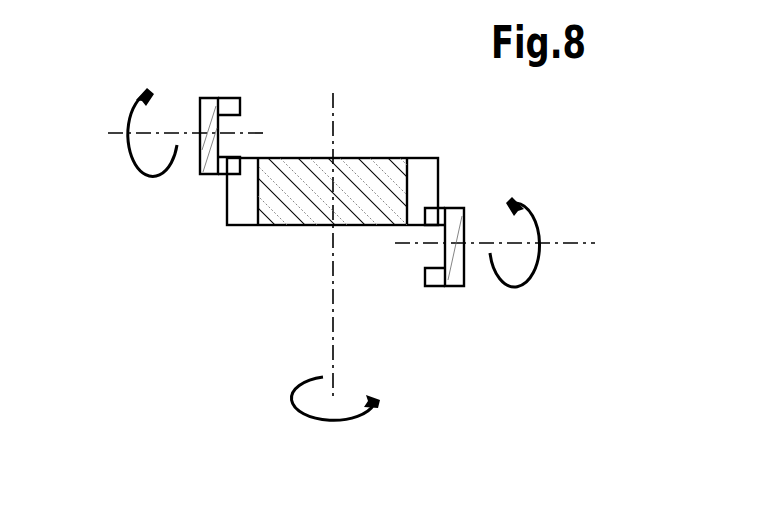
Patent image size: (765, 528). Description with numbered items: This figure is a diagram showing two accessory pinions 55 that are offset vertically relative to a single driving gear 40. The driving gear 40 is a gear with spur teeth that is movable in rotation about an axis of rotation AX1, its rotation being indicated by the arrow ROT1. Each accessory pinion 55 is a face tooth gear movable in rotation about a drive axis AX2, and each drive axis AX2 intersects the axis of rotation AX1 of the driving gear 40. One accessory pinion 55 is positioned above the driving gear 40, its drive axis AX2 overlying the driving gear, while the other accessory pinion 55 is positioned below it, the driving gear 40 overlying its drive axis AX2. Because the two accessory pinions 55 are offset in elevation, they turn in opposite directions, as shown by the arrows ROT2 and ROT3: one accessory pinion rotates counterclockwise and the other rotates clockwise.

The driving gear 40 is at (302, 226).
The accessory pinion 55 is at (212, 98).
The axis of rotation AX1 is at (335, 117).
The drive axis AX2 is at (254, 132).
The rotation about AX1 ROT1 is at (335, 419).
The rotation about AX2 (right) ROT2 is at (518, 262).
The rotation about AX2 (left) ROT3 is at (150, 151).